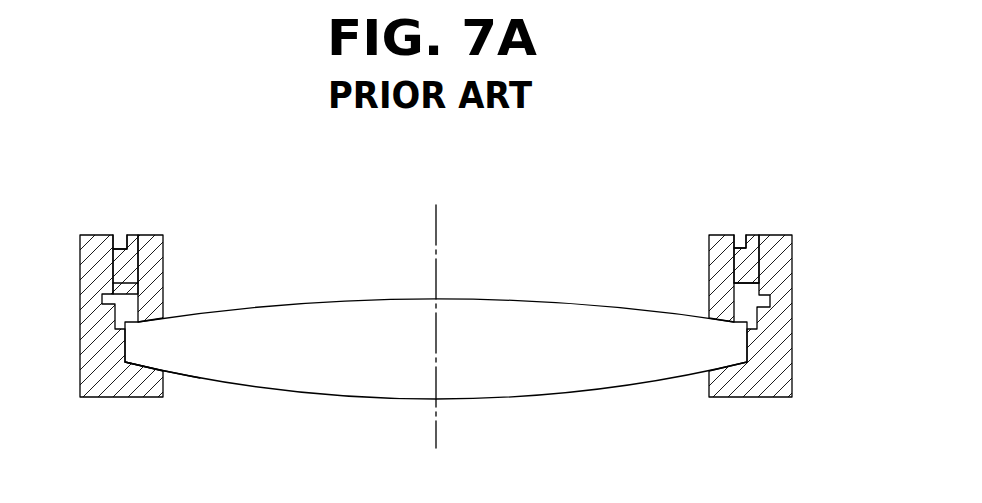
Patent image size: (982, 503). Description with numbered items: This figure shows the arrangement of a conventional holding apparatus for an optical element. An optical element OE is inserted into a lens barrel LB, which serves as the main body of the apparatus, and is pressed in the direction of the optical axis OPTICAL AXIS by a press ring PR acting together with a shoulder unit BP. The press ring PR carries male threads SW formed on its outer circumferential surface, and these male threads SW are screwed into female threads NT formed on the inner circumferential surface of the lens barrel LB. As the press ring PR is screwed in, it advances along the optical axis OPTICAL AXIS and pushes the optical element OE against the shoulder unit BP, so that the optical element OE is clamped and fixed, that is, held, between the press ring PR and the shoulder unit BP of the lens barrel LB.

The female threads NT is at (120, 236).
The male threads SW is at (122, 262).
The press ring PR is at (163, 292).
The optical element OE is at (556, 315).
The shoulder unit BP is at (160, 363).
The lens barrel LB is at (106, 386).
The optical axis OPTICAL AXIS is at (437, 438).